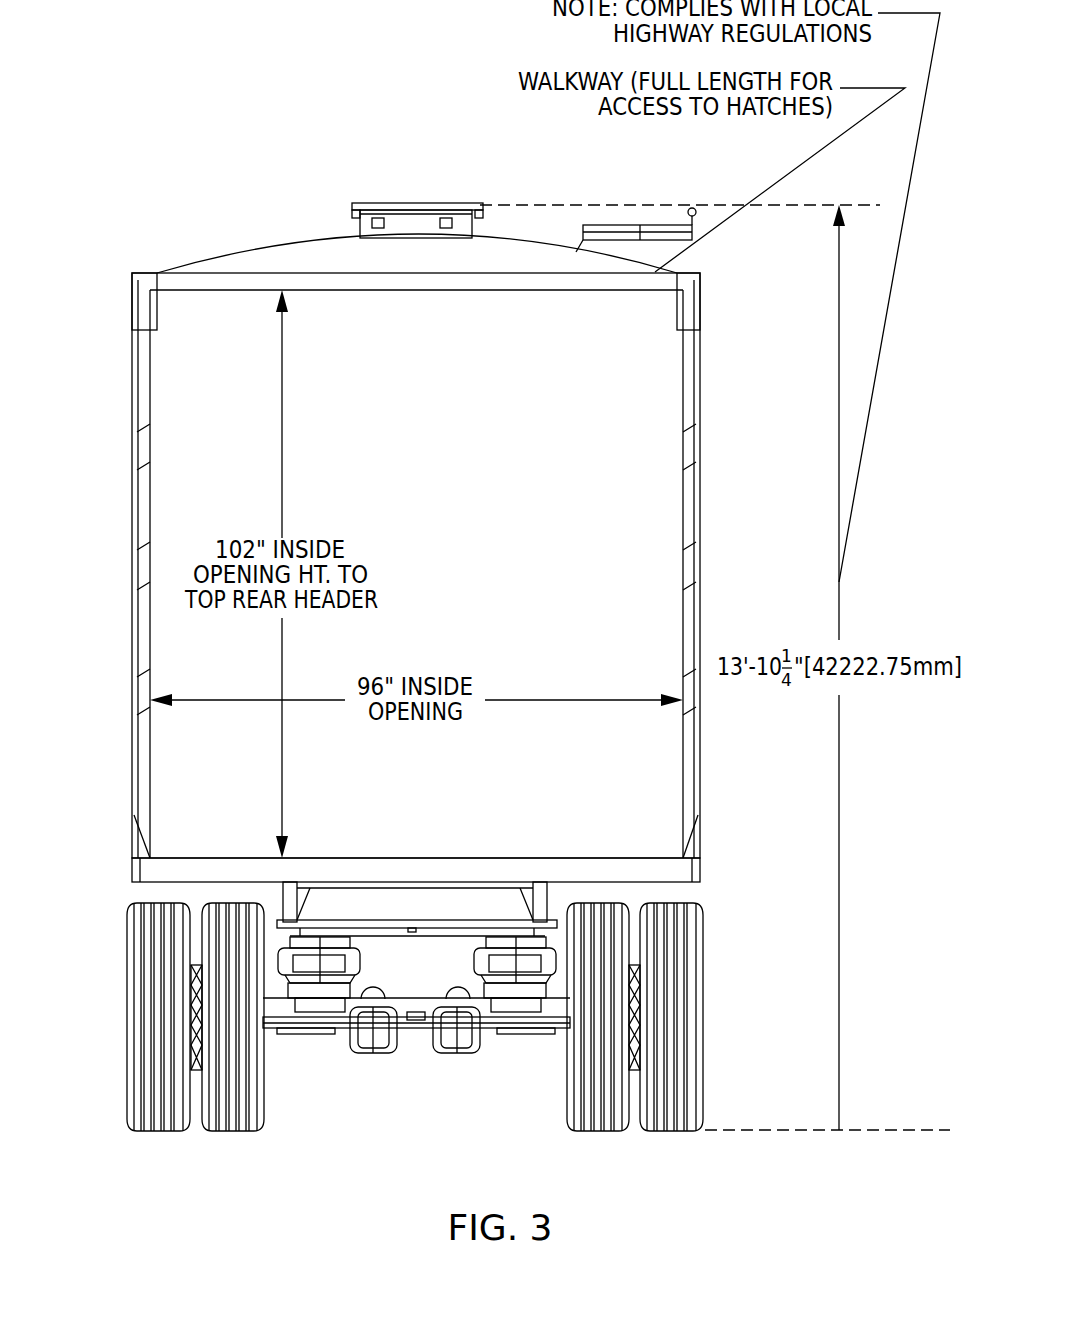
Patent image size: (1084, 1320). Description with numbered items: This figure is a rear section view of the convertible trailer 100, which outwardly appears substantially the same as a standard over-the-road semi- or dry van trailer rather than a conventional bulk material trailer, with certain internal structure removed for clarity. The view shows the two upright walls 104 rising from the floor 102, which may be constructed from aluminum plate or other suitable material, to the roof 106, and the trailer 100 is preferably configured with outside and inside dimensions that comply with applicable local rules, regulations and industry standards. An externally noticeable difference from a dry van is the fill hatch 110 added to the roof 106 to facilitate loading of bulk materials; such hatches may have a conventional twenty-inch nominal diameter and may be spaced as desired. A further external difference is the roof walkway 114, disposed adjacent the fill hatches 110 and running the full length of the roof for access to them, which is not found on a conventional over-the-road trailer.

The convertible trailer 100 is at (105, 154).
The floor 102 is at (403, 858).
The wall 104 is at (472, 556).
The roof 106 is at (296, 244).
The fill hatch 110 is at (416, 190).
The roof walkway 114 is at (722, 252).